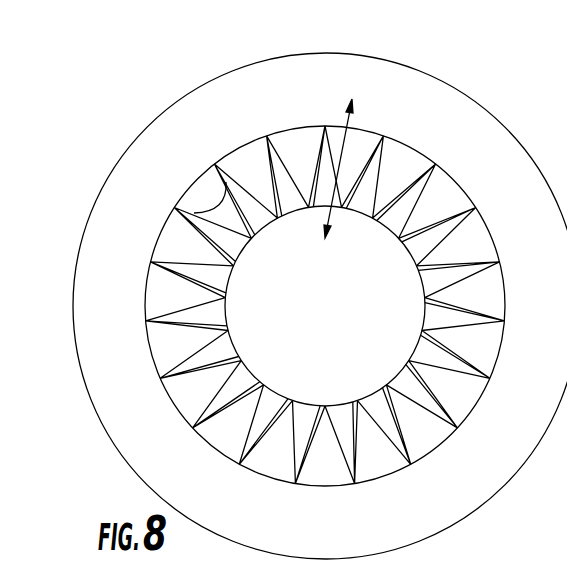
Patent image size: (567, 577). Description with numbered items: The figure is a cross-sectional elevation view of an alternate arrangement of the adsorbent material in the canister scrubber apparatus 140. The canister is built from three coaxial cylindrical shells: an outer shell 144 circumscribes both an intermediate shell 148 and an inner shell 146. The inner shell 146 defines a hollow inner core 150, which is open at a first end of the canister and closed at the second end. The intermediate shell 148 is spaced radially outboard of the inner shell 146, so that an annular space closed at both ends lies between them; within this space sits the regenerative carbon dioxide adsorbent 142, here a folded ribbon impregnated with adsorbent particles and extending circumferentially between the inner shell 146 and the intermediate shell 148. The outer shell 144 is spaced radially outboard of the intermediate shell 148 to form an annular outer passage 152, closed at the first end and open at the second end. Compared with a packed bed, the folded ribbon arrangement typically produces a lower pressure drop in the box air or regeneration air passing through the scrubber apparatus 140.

The scrubber apparatus 140 is at (112, 123).
The regenerative carbon dioxide adsorbent 142 is at (192, 215).
The outer shell 144 is at (375, 55).
The inner shell 146 is at (417, 253).
The intermediate shell 148 is at (428, 160).
The hollow inner core 150 is at (343, 307).
The annular outer passage 152 is at (412, 114).